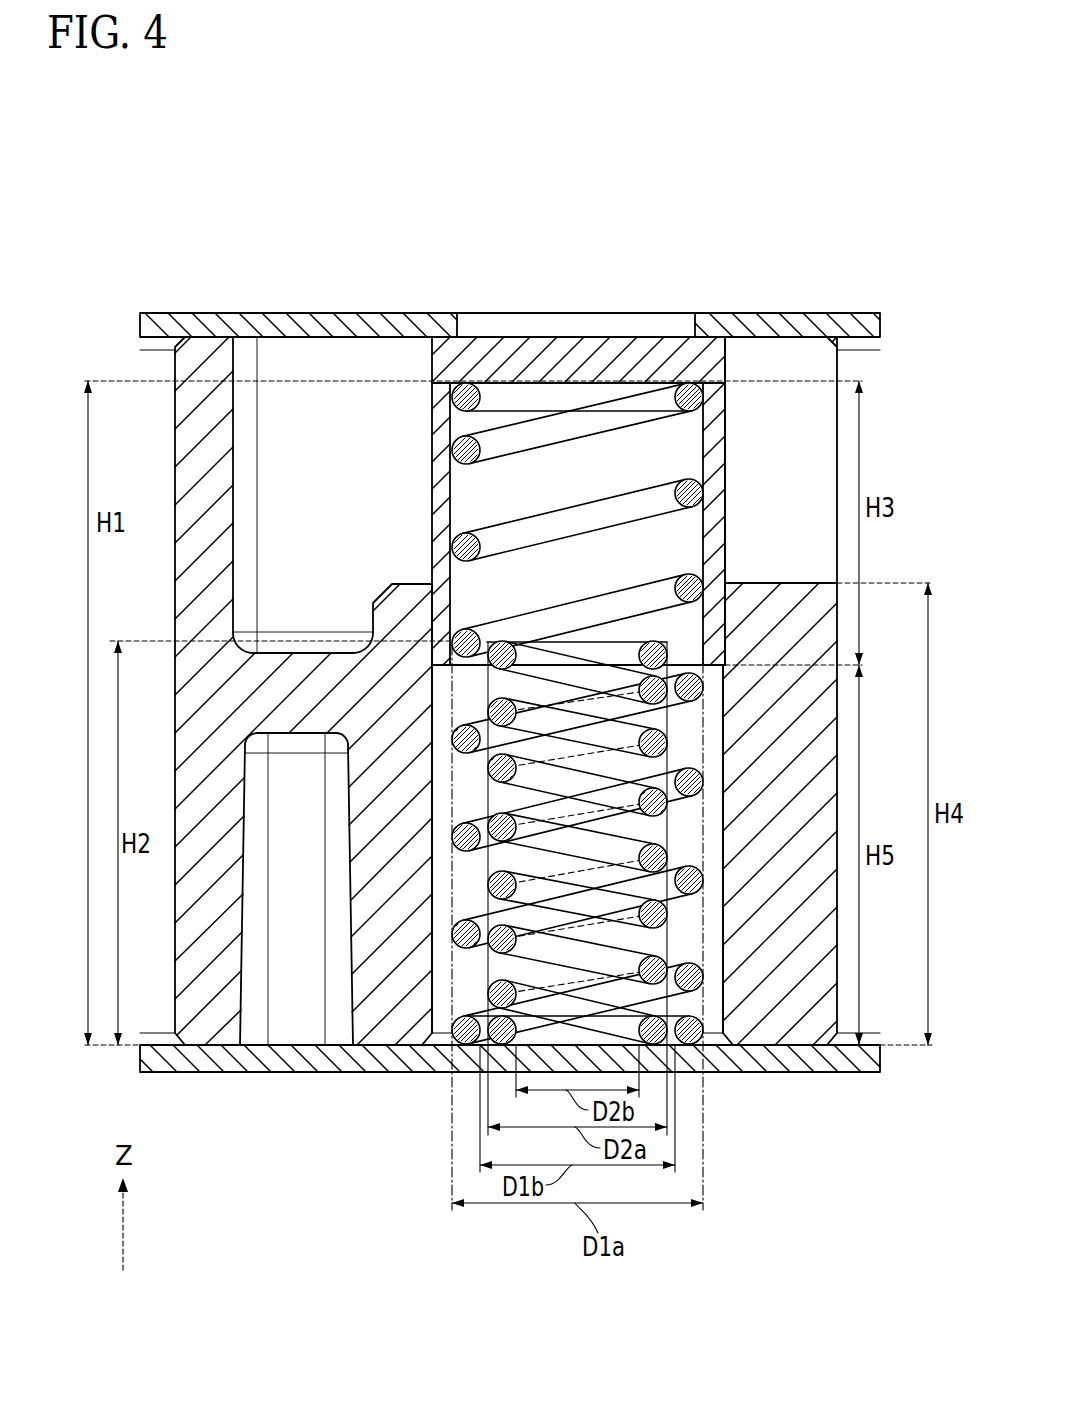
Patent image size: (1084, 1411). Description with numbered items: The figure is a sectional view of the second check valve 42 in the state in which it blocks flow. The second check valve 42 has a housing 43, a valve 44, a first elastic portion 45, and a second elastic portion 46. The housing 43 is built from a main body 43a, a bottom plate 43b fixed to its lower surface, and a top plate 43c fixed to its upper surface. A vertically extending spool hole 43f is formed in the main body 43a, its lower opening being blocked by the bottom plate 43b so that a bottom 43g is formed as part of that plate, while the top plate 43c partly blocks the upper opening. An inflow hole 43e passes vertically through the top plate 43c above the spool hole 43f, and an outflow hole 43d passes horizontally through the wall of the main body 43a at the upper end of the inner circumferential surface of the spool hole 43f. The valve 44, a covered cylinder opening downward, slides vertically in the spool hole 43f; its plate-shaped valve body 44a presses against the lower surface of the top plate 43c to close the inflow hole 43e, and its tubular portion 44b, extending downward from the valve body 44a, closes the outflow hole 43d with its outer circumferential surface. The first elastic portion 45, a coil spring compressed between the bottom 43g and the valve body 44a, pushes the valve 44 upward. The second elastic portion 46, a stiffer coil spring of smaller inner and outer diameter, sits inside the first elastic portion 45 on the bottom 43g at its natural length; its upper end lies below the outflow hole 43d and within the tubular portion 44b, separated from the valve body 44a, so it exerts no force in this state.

The second check valve 42 is at (818, 206).
The housing 43 is at (799, 298).
The main body 43a is at (800, 803).
The bottom plate 43b is at (190, 1080).
The top plate 43c is at (362, 330).
The outflow hole 43d is at (800, 583).
The inflow hole 43e is at (459, 329).
The spool hole 43f is at (712, 735).
The bottom 43g is at (717, 1057).
The valve 44 is at (612, 330).
The valve body 44a is at (546, 348).
The tubular portion 44b is at (447, 466).
The first elastic portion 45 is at (467, 1042).
The second elastic portion 46 is at (653, 968).